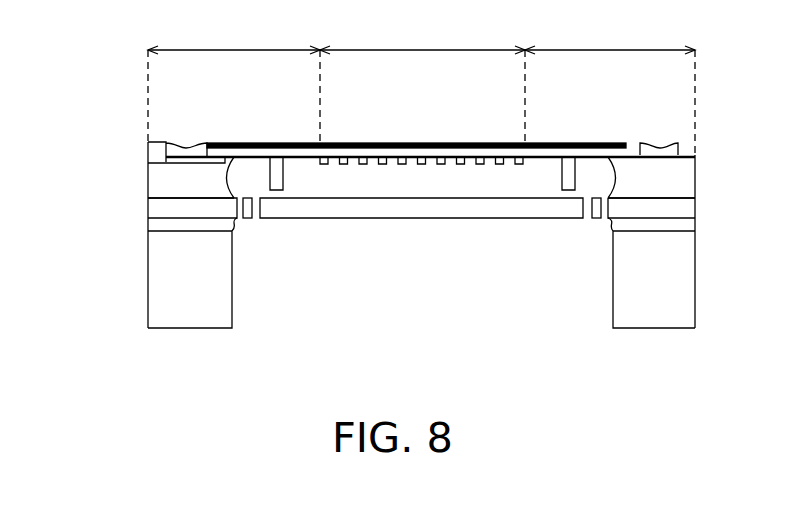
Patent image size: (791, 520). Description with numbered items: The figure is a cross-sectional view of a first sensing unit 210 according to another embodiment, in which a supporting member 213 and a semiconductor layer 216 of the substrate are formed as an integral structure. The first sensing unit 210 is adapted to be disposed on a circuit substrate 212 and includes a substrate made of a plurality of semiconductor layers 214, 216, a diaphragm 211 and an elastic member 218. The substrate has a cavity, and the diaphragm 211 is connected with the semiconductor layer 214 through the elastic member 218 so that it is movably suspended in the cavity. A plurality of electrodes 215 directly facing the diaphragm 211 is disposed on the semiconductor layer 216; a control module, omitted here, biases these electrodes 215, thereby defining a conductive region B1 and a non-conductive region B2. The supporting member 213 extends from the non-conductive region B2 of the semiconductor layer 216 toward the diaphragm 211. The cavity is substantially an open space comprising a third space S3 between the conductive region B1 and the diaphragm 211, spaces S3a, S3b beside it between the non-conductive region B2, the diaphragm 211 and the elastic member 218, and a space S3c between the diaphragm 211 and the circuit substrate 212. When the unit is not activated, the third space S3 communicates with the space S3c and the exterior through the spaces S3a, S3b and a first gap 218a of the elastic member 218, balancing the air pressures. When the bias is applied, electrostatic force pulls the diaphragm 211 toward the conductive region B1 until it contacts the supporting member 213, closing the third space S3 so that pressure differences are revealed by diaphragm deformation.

The first sensing unit 210 is at (108, 78).
The diaphragm 211 is at (397, 218).
The circuit substrate 212 is at (157, 298).
The supporting member 213 is at (573, 178).
The semiconductor layer 214 is at (155, 210).
The electrodes 215 is at (420, 165).
The semiconductor layer 216 is at (540, 145).
The elastic member 218 is at (597, 219).
The first gap 218a is at (262, 230).
The third space S3 is at (476, 186).
The space S3a is at (250, 176).
The space S3b is at (614, 187).
The space S3c is at (373, 304).
The conductive region B1 is at (422, 80).
The non-conductive region B2 is at (421, 86).